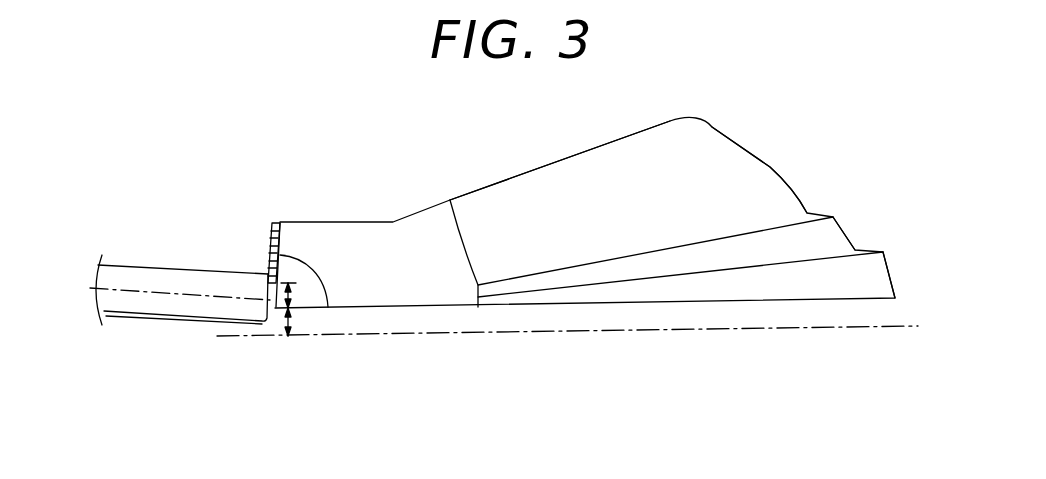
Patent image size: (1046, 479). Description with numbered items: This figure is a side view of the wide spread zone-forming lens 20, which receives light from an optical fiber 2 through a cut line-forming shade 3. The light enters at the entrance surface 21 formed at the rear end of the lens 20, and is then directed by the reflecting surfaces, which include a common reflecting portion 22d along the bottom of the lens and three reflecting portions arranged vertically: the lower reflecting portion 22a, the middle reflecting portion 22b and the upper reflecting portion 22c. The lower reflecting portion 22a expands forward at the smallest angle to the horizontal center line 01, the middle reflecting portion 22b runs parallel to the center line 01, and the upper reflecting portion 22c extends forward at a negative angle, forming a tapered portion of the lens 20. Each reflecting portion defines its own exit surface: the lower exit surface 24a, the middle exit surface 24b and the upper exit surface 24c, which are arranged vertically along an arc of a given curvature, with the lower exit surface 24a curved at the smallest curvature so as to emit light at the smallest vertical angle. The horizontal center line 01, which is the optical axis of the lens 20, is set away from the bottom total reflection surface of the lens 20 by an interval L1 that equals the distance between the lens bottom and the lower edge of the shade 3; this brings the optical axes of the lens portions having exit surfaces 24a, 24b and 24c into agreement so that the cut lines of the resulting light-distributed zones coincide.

The horizontal center line 01 is at (473, 333).
The optical fiber 2 is at (148, 268).
The cut line-forming shade 3 is at (270, 240).
The wide spread zone-forming lens 20 is at (432, 178).
The entrance surface 21 is at (328, 307).
The lower reflecting portion 22a is at (810, 283).
The middle reflecting portion 22b is at (693, 258).
The upper reflecting portion 22c is at (545, 180).
The common reflecting portion 22d is at (378, 275).
The lower exit surface 24a is at (893, 273).
The middle exit surface 24b is at (845, 230).
The upper exit surface 24c is at (773, 167).
The interval L1 is at (299, 310).